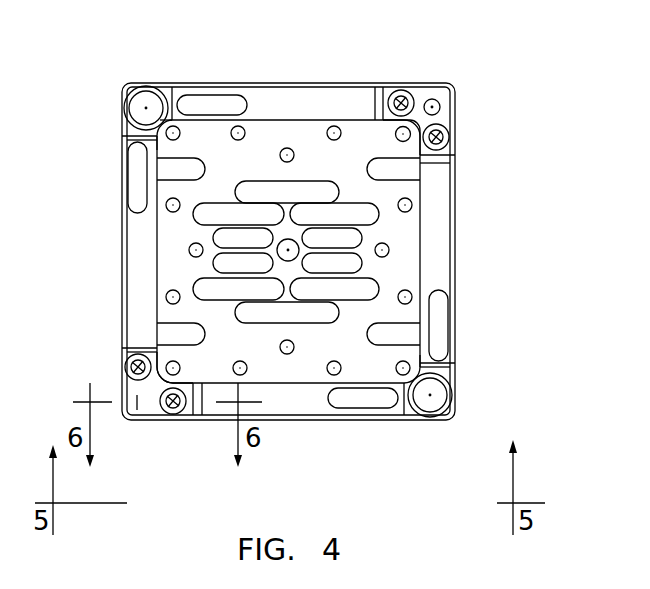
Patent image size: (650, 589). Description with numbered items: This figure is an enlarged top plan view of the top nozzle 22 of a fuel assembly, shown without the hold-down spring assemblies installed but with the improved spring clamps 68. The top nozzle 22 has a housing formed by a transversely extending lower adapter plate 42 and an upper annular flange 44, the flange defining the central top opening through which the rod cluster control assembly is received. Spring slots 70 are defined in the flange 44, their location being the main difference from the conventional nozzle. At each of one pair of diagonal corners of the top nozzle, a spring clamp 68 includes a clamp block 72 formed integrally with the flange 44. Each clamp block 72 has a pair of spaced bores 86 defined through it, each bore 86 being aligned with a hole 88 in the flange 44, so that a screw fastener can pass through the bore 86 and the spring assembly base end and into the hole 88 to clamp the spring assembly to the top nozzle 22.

The top nozzle 22 is at (466, 60).
The lower adapter plate 42 is at (403, 227).
The upper annular flange 44 is at (287, 95).
The spring clamp 68 is at (436, 76).
The spring slot 70 is at (217, 106).
The clamp block 72 is at (440, 109).
The bore 86 is at (397, 92).
The hole 88 is at (392, 96).